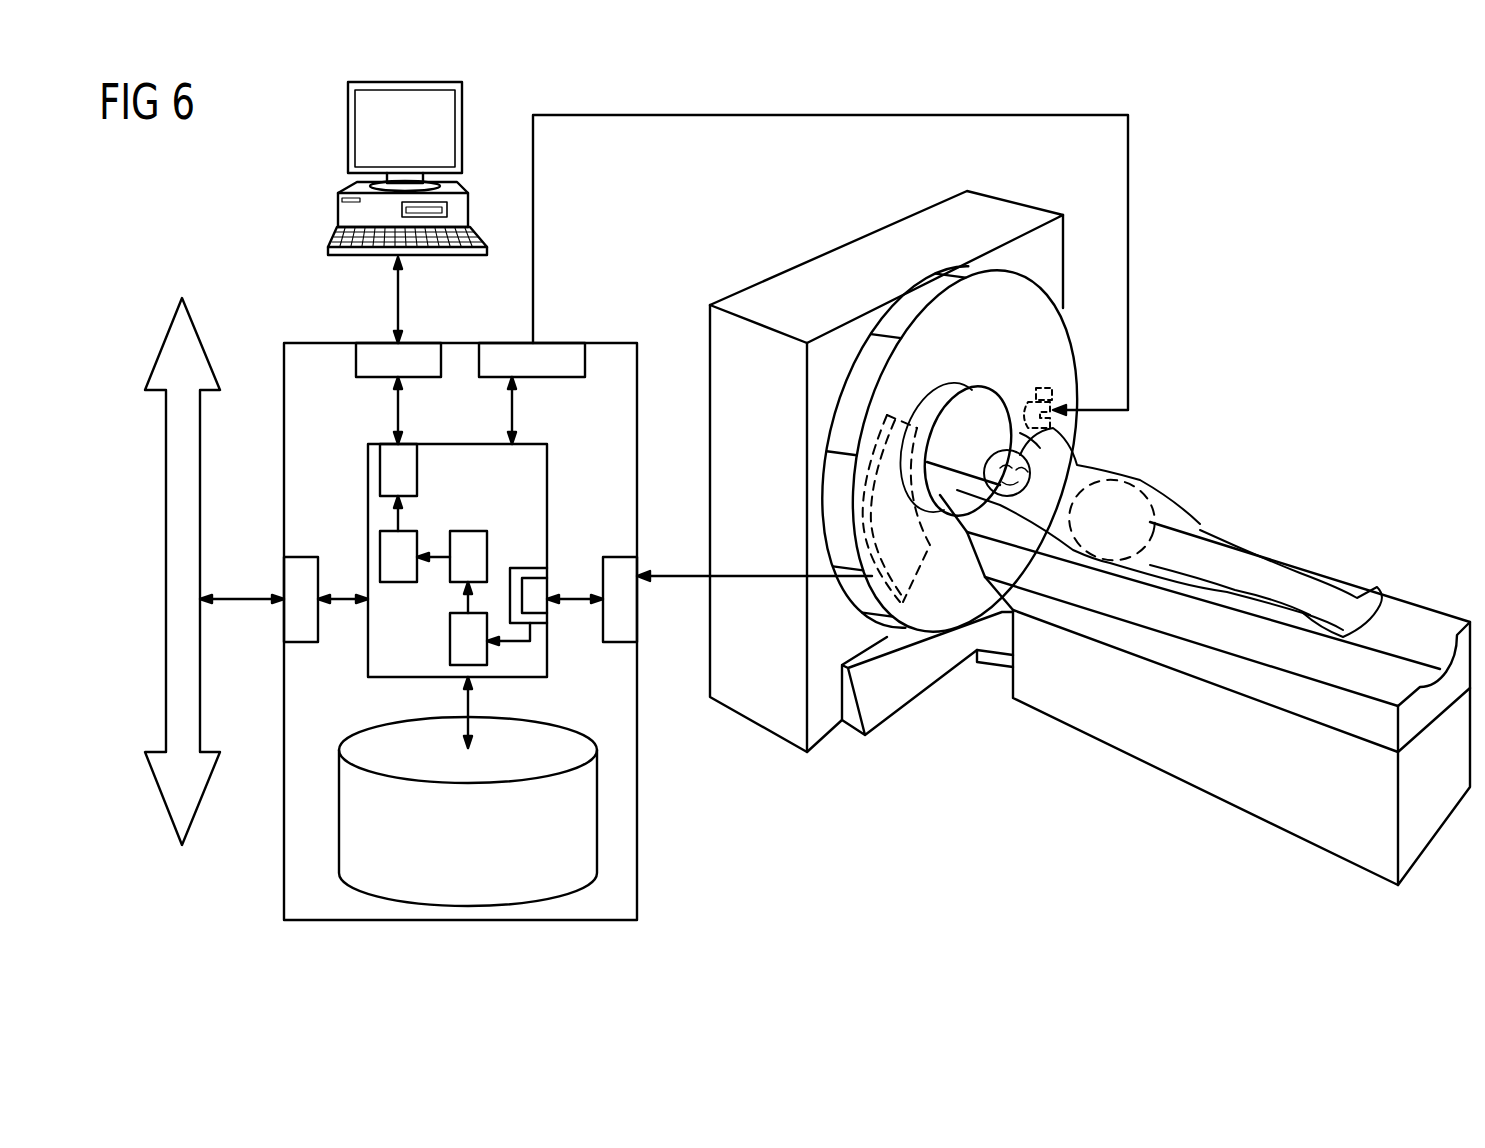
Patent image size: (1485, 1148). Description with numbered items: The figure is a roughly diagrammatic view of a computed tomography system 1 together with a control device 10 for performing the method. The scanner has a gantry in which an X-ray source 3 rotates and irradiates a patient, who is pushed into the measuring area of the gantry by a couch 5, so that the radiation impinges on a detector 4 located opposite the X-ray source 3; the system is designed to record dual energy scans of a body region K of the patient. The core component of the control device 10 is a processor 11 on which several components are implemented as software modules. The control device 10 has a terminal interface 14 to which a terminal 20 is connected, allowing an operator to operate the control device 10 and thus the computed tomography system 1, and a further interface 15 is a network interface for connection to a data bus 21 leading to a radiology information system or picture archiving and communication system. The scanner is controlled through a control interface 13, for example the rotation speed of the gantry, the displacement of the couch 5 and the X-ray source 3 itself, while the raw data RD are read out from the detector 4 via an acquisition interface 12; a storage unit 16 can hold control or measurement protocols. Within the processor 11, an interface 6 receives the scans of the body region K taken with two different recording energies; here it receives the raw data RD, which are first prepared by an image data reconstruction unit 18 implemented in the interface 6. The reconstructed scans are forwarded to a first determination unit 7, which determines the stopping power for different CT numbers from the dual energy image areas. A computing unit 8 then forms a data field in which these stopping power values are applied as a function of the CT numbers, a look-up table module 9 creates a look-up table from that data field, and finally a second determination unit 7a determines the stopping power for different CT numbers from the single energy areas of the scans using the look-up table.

The computed tomography system 1 is at (1323, 275).
The X-ray source 3 is at (1043, 388).
The detector 4 is at (912, 568).
The couch 5 is at (1110, 749).
The interface 6 is at (516, 575).
The first determination unit 7 is at (450, 648).
The second determination unit 7a is at (388, 472).
The computing unit 8 is at (468, 530).
The look-up table module 9 is at (380, 540).
The control device 10 is at (458, 343).
The processor 11 is at (452, 444).
The acquisition interface 12 is at (628, 604).
The control interface 13 is at (557, 356).
The terminal interface 14 is at (382, 356).
The interface 15 is at (295, 568).
The storage unit 16 is at (358, 732).
The image data reconstruction unit 18 is at (536, 607).
The terminal 20 is at (348, 124).
The data bus 21 is at (166, 554).
The body region K is at (1125, 486).
The raw data RD is at (688, 575).